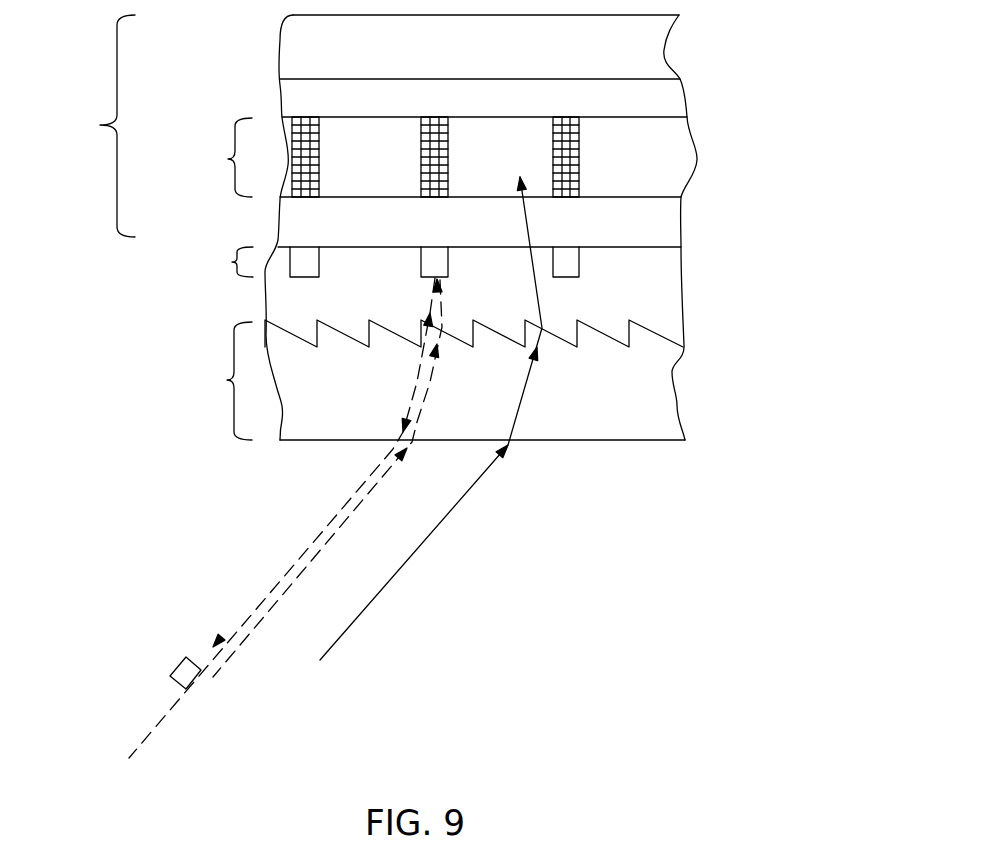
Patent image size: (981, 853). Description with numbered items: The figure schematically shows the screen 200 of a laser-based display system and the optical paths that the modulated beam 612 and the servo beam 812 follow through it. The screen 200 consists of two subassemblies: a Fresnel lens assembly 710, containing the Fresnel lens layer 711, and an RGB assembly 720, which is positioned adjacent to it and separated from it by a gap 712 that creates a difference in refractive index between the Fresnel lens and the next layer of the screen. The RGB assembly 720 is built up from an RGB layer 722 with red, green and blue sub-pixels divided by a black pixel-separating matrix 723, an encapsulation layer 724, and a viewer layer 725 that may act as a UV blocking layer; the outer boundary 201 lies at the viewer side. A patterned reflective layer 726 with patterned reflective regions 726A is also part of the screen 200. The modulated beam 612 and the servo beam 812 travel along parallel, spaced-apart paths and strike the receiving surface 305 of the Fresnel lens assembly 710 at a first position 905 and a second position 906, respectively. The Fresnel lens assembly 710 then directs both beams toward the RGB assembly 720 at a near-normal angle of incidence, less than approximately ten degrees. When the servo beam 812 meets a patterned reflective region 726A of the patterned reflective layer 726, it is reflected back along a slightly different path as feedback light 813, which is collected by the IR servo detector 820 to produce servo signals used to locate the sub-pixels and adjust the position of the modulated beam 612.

The screen 200 is at (780, 141).
The top surface 201 is at (410, 15).
The viewer layer 725 is at (503, 59).
The encapsulation layer 724 is at (503, 111).
The black pixel-separating matrix 723 is at (569, 117).
The RGB layer 722 is at (228, 159).
The RGB assembly 720 is at (100, 125).
The patterned reflective layer 726 is at (232, 262).
The patterned reflective regions 726A is at (319, 270).
The gap 712 is at (308, 293).
The Fresnel lens assembly 710 is at (227, 380).
The Fresnel lens layer 711 is at (623, 413).
The feedback light 813 is at (302, 545).
The second position 906 is at (419, 462).
The first position 905 is at (538, 462).
The receiving surface 305 is at (640, 483).
The modulated beam 612 is at (393, 583).
The IR servo detector 820 is at (170, 676).
The servo beam 812 is at (250, 627).